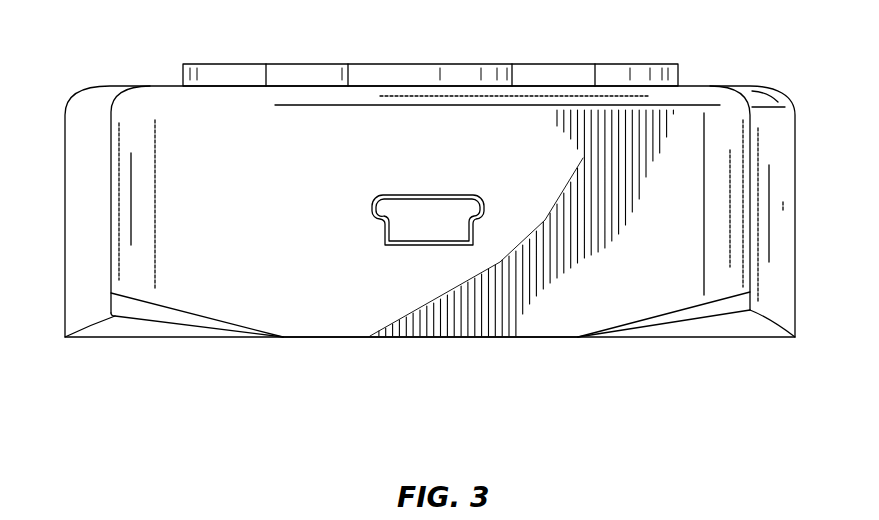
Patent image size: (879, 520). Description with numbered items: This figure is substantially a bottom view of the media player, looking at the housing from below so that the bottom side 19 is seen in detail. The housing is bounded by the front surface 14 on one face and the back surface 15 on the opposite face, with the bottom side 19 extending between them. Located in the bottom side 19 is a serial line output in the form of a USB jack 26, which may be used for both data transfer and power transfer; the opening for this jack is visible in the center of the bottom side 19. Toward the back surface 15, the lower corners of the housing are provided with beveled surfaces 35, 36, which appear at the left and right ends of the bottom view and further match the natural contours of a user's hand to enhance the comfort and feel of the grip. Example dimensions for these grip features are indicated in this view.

The front surface 14 is at (130, 86).
The back surface 15 is at (370, 337).
The bottom side 19 is at (455, 303).
The USB jack 26 is at (500, 260).
The beveled surface 35 is at (136, 327).
The beveled surface 36 is at (748, 310).